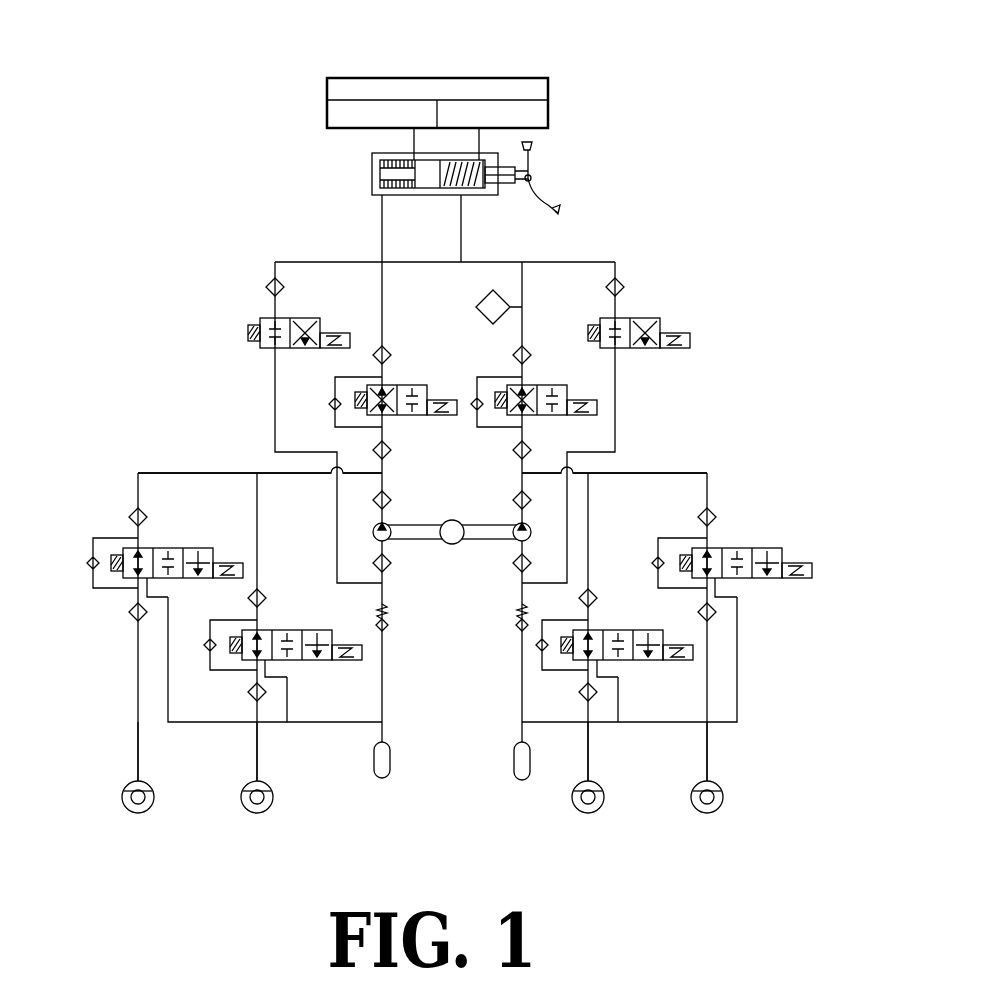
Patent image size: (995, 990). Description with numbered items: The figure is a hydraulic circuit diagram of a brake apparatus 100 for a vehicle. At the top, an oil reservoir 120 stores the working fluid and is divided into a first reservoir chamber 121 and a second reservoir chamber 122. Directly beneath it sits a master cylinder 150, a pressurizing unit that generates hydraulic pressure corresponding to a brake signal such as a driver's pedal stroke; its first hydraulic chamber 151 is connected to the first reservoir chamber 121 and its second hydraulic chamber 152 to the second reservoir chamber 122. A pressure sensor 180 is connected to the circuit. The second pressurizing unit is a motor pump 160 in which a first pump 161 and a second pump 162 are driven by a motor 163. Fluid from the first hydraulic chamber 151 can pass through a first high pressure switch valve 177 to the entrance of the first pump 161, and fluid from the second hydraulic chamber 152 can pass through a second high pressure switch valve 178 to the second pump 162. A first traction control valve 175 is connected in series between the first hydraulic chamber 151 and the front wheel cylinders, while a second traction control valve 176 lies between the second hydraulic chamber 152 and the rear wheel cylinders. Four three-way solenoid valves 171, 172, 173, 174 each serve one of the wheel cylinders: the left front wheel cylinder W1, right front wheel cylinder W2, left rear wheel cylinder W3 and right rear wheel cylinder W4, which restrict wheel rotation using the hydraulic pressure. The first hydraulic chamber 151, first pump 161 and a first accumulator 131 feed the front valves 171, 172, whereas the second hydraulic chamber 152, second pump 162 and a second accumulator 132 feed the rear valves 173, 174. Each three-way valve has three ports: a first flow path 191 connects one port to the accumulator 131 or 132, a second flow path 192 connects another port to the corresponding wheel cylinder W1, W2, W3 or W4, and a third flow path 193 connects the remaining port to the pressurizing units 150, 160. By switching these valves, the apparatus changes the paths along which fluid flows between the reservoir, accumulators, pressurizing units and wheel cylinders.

The brake apparatus 100 is at (136, 25).
The oil reservoir 120 is at (435, 78).
The first reservoir chamber 121 is at (325, 115).
The second reservoir chamber 122 is at (553, 112).
The master cylinder 150 is at (466, 204).
The first hydraulic chamber 151 is at (400, 188).
The second hydraulic chamber 152 is at (458, 196).
The motor pump 160 is at (452, 573).
The first pump 161 is at (418, 541).
The second pump 162 is at (483, 541).
The motor 163 is at (450, 556).
The 3-way solenoid valve 171 is at (203, 548).
The 3-way solenoid valve 172 is at (285, 630).
The 3-way solenoid valve 173 is at (607, 630).
The 3-way solenoid valve 174 is at (770, 548).
The first traction control valve 175 is at (415, 385).
The second traction control valve 176 is at (545, 385).
The first high pressure switch valve 177 is at (310, 318).
The second high pressure switch valve 178 is at (650, 318).
The pressure sensor 180 is at (476, 302).
The first accumulator 131 is at (384, 780).
The second accumulator 132 is at (514, 775).
The first flow path 191 is at (322, 722).
The second flow path 192 is at (140, 745).
The third flow path 193 is at (285, 476).
The left front wheel cylinder W1 is at (152, 792).
The right front wheel cylinder W2 is at (272, 792).
The left rear wheel cylinder W3 is at (575, 791).
The right rear wheel cylinder W4 is at (693, 791).